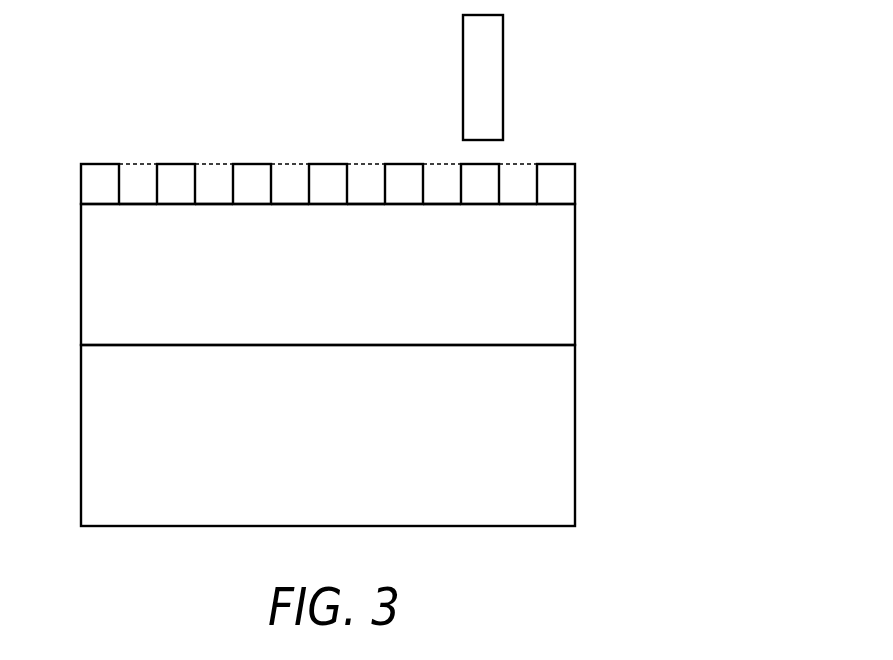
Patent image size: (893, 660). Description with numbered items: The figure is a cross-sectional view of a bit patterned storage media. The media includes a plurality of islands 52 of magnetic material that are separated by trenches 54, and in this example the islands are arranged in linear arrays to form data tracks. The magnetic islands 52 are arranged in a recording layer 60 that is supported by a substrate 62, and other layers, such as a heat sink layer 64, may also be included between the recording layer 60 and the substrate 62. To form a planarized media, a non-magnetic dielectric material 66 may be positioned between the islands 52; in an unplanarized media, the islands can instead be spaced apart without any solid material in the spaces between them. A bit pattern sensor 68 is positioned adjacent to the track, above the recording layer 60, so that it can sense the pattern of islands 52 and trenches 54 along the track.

The islands 52 is at (335, 168).
The trenches 54 is at (290, 200).
The recording layer 60 is at (395, 301).
The substrate 62 is at (557, 457).
The heat sink layer 64 is at (560, 282).
The non-magnetic dielectric material 66 is at (212, 168).
The bit pattern sensor 68 is at (485, 67).